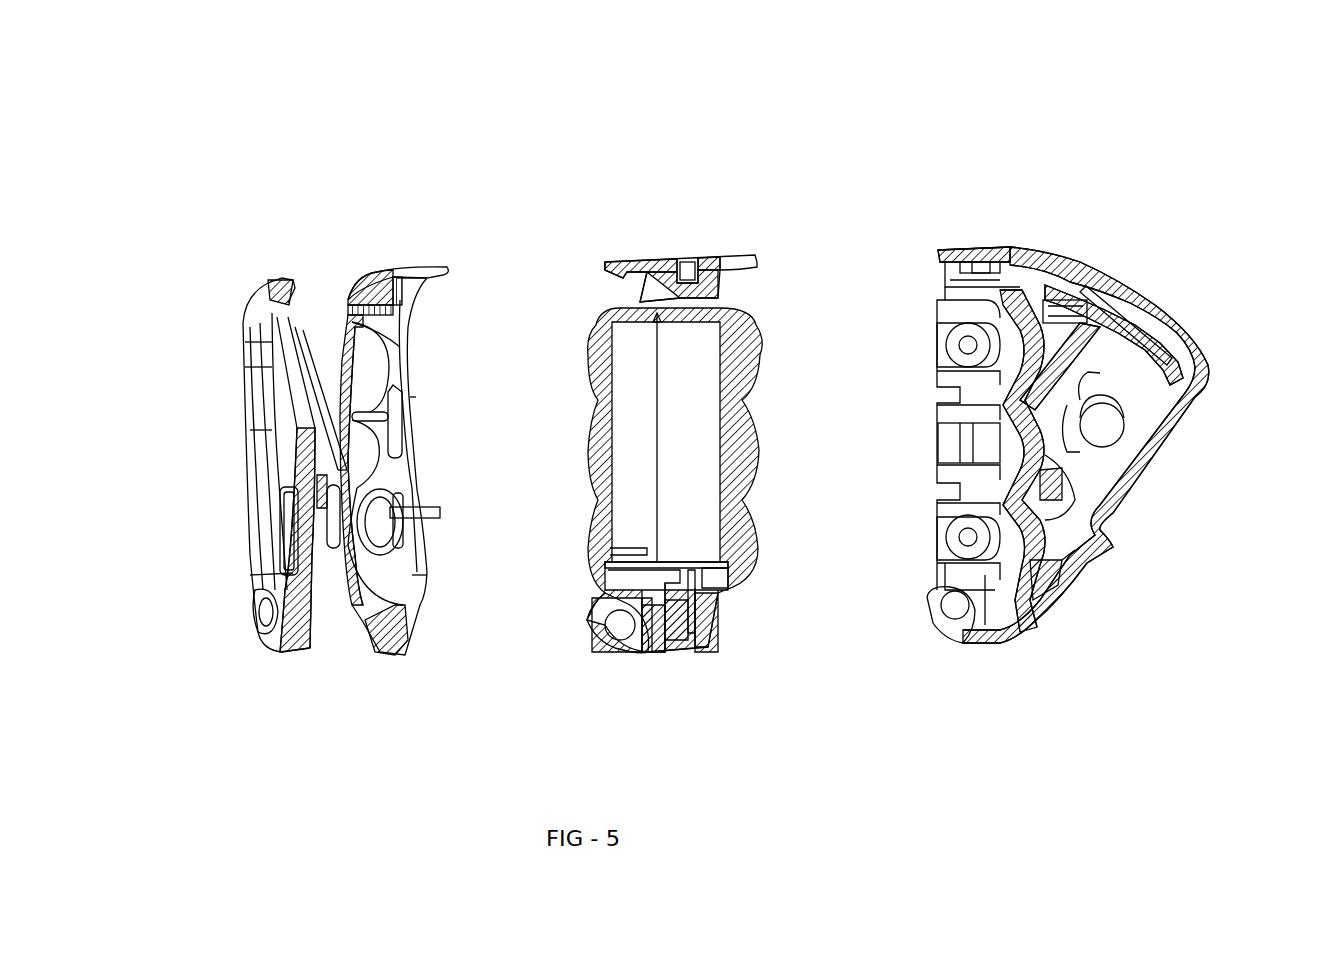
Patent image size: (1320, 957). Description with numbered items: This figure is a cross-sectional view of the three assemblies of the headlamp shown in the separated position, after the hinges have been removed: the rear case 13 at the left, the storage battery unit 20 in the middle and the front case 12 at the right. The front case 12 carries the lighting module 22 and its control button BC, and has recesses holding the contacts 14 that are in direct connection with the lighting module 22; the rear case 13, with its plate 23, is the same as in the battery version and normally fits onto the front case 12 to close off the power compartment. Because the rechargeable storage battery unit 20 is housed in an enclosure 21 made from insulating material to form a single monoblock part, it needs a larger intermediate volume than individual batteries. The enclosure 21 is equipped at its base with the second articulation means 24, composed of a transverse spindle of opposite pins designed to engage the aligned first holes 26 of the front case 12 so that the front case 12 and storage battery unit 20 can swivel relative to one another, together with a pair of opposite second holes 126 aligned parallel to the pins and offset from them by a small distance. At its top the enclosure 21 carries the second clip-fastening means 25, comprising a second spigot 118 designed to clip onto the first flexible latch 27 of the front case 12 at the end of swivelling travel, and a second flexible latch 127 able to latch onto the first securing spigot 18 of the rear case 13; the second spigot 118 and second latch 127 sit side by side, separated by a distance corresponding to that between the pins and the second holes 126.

The front case 12 is at (1054, 409).
The rear case 13 is at (235, 370).
The contacts 14 is at (897, 510).
The first securing spigot 18 is at (224, 192).
The storage battery unit 20 is at (641, 409).
The enclosure 21 is at (749, 368).
The lighting module 22 is at (1193, 503).
The plate 23 is at (166, 465).
The second articulation means 24 is at (678, 672).
The second clip-fastening means 25 is at (564, 193).
The first holes 26 is at (995, 660).
The first flexible latch 27 is at (1029, 186).
The second spigot 118 is at (716, 187).
The second holes 126 is at (548, 663).
The second flexible latch 127 is at (499, 181).
The control button BC is at (1197, 295).